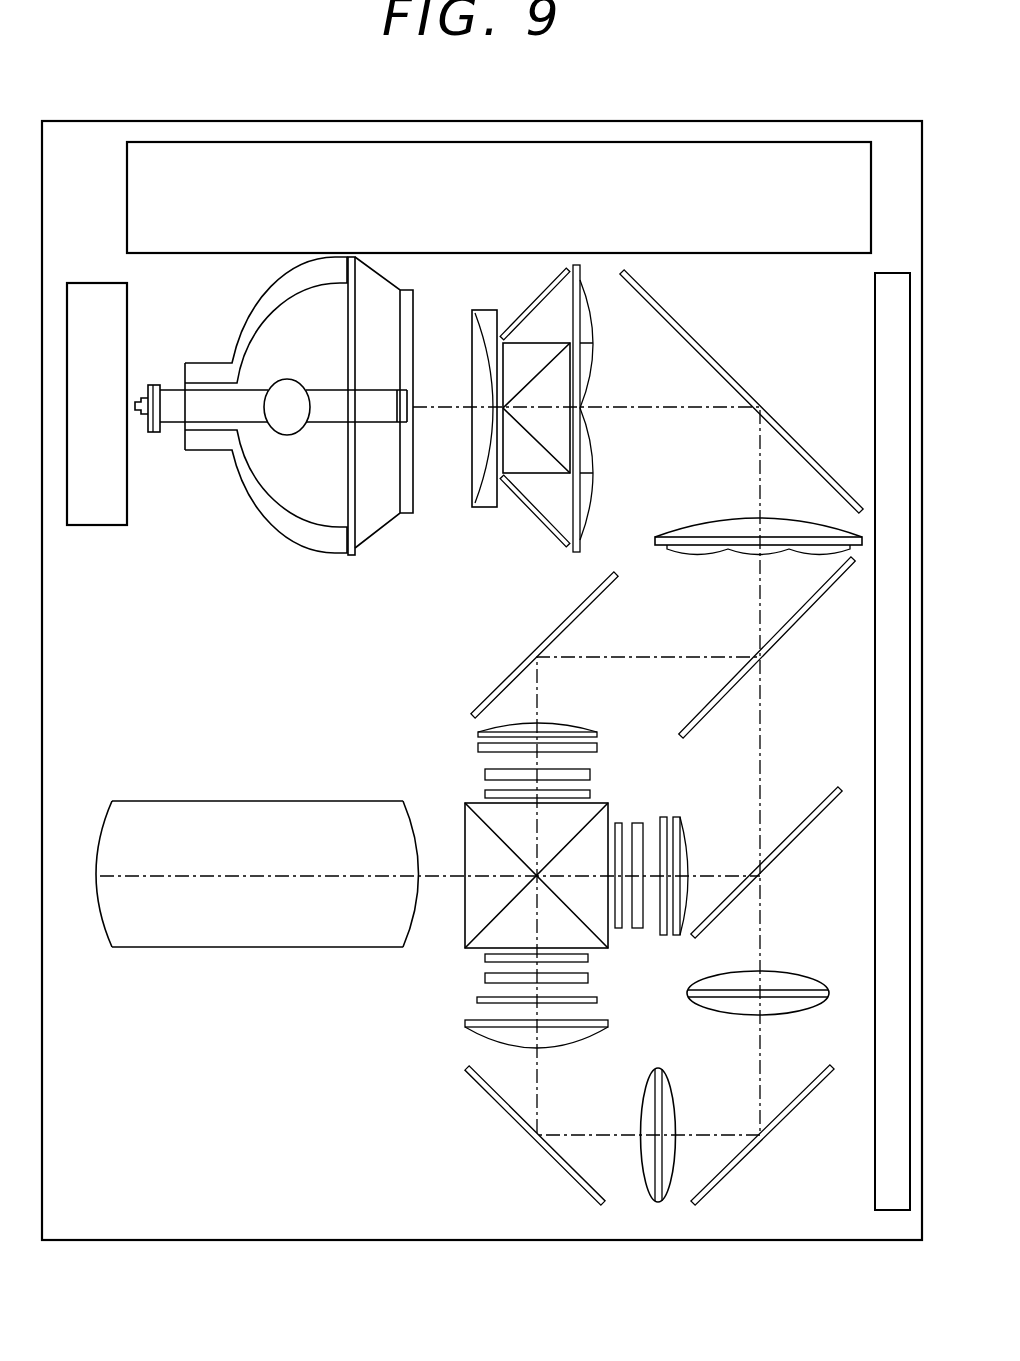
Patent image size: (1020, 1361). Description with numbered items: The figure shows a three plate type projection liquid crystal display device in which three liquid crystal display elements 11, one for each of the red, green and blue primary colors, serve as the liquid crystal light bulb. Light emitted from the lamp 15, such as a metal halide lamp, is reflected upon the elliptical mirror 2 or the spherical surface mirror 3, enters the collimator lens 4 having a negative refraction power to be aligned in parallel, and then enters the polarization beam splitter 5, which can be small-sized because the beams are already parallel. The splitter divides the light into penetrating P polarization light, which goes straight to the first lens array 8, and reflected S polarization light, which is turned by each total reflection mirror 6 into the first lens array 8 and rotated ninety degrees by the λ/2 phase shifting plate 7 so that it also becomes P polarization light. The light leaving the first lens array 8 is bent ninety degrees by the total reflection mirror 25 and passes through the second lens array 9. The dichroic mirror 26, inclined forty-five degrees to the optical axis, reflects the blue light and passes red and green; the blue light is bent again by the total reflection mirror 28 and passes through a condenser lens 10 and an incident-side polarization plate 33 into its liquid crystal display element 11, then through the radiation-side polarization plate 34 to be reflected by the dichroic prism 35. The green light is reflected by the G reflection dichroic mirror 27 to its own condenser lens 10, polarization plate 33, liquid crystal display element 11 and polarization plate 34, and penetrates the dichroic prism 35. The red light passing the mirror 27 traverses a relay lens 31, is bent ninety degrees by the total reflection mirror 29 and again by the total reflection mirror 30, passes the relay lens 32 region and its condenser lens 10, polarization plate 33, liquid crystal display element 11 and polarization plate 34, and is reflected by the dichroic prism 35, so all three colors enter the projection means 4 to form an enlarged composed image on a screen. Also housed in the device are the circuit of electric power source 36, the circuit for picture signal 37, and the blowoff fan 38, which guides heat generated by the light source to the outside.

The elliptical mirror 2 is at (250, 316).
The spherical surface mirror 3 is at (392, 540).
The collimator lens 4 is at (483, 509).
The polarization beam splitter 5 is at (554, 478).
The total reflection mirror 6 is at (522, 312).
The λ/2 phase shifting plate 7 is at (566, 306).
The first lens array 8 is at (596, 378).
The second lens array 9 is at (693, 523).
The condenser lens 10 is at (584, 726).
The liquid crystal display element 11 is at (485, 775).
The lamp 15 is at (283, 438).
The total reflection mirror 25 is at (712, 352).
The dichroic mirror 26 is at (810, 610).
The G reflection dichroic mirror 27 is at (800, 840).
The total reflection mirror 28 is at (495, 690).
The total reflection mirror 29 is at (793, 1107).
The total reflection mirror 30 is at (492, 1096).
The relay lens 31 is at (798, 972).
The relay lens 32 is at (661, 1068).
The polarization plate at the incident side 33 is at (598, 748).
The polarization plate at the radiation side 34 is at (485, 795).
The dichroic prism 35 is at (462, 937).
The circuit of electric power source 36 is at (127, 205).
The circuit for picture signal 37 is at (875, 392).
The blowoff fan 38 is at (92, 528).